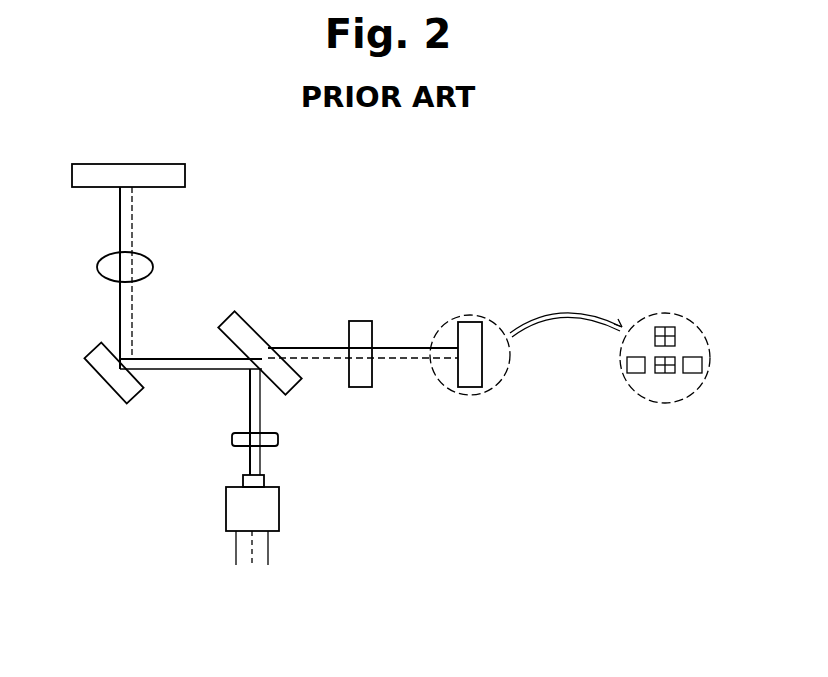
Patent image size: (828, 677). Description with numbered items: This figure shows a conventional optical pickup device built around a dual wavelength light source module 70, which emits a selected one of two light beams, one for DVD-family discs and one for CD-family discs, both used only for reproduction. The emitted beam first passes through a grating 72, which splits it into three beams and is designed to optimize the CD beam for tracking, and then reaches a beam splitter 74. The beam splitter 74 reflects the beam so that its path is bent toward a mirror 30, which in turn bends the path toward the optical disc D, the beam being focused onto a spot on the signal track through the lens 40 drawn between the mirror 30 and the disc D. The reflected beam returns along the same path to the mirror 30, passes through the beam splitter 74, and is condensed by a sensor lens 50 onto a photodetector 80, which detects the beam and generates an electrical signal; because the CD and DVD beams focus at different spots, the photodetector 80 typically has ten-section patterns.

The optical disc D is at (185, 172).
The mirror 30 is at (118, 395).
The lens 40 is at (153, 265).
The sensor lens 50 is at (364, 321).
The dual wavelength light source module 70 is at (279, 507).
The grating 72 is at (278, 440).
The beam splitter 74 is at (262, 323).
The photodetector 80 is at (470, 322).